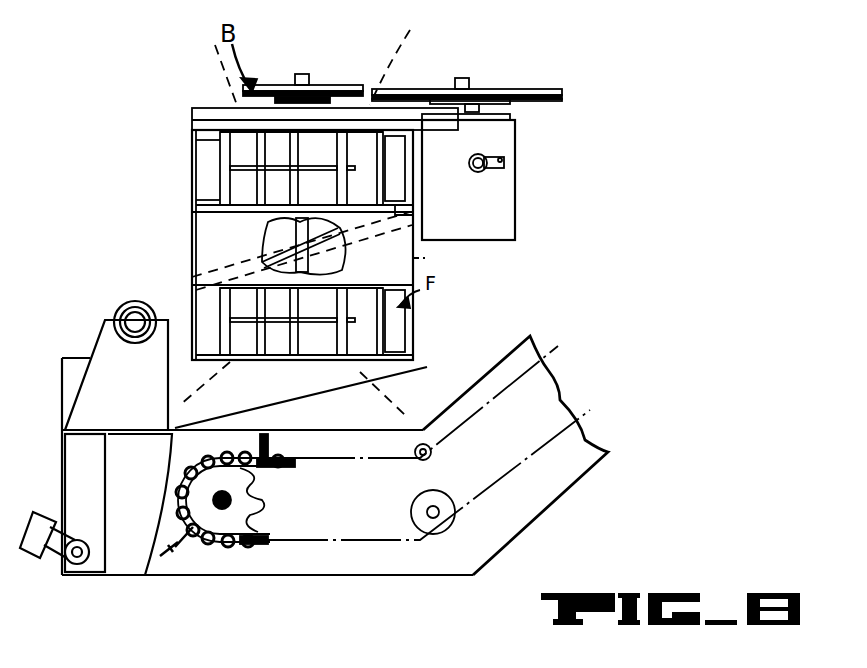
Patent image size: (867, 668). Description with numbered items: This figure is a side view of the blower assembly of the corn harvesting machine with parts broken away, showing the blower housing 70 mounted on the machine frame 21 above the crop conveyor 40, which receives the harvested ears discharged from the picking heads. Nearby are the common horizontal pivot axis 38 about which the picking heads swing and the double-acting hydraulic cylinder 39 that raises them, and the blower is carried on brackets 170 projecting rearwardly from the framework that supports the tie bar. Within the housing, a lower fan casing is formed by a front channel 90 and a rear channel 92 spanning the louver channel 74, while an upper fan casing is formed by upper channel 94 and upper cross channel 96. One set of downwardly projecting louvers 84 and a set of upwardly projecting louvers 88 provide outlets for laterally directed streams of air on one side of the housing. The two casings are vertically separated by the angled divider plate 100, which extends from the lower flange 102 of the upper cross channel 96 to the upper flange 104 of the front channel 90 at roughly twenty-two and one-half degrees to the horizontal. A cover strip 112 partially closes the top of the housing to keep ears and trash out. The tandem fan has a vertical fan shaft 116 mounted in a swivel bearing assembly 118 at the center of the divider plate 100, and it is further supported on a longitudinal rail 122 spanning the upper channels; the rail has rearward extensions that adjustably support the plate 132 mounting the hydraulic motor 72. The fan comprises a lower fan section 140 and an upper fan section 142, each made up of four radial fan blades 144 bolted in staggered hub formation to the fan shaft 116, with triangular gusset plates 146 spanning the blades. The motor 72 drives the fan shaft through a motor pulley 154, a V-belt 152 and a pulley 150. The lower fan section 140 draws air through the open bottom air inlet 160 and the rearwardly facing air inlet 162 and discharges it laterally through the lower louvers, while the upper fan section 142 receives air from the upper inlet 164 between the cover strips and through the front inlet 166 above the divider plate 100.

The frame 21 is at (578, 468).
The horizontal pivot axis 38 is at (114, 320).
The double-acting hydraulic cylinder 39 is at (42, 520).
The crop conveyor 40 is at (270, 545).
The blower housing 70 is at (410, 310).
The hydraulic motor 72 is at (508, 180).
The louver channel 74 is at (200, 243).
The downwardly projecting louvers 84 is at (345, 352).
The upwardly projecting louvers 88 is at (322, 188).
The front channel 90 is at (192, 340).
The rear channel 92 is at (410, 340).
The upper channel 94 is at (192, 162).
The upper cross channel 96 is at (413, 213).
The divider plate 100 is at (335, 237).
The lower flange 102 is at (405, 210).
The upper flange 104 is at (206, 282).
The cover strip 112 is at (196, 120).
The fan shaft 116 is at (305, 262).
The swivel bearing assembly 118 is at (292, 235).
The longitudinal rail 122 is at (422, 122).
The plate 132 is at (500, 118).
The lower fan section 140 is at (398, 325).
The upper fan section 142 is at (225, 148).
The radial fan blades 144 is at (372, 177).
The triangular gusset plates 146 is at (240, 172).
The pulley 150 is at (342, 84).
The V-belt 152 is at (392, 89).
The motor pulley 154 is at (510, 90).
The bottom air inlet 160 is at (357, 365).
The rearwardly facing air inlet 162 is at (425, 256).
The upper inlet 164 is at (226, 110).
The front inlet 166 is at (196, 232).
The brackets 170 is at (178, 408).